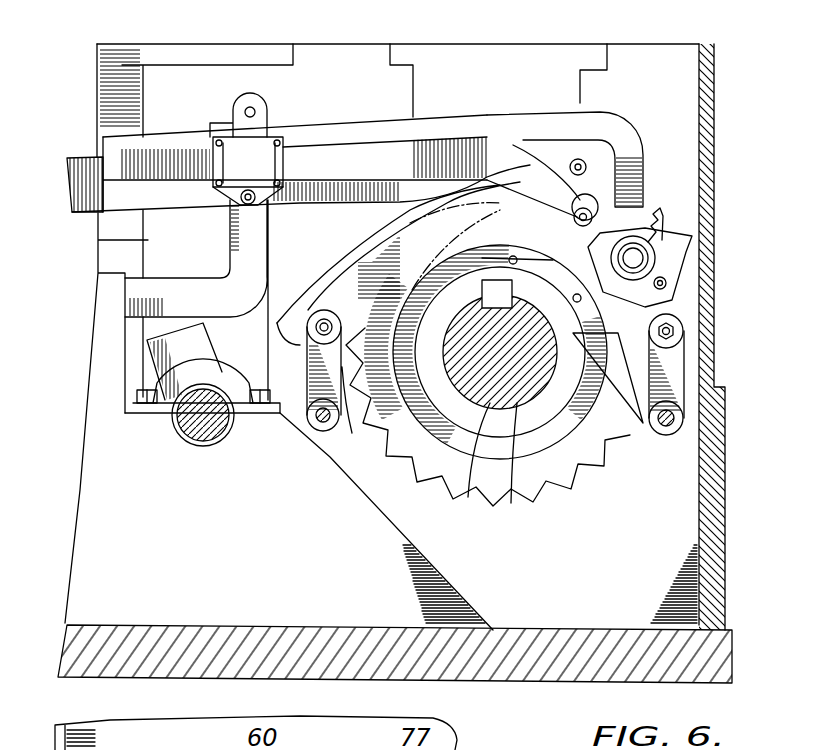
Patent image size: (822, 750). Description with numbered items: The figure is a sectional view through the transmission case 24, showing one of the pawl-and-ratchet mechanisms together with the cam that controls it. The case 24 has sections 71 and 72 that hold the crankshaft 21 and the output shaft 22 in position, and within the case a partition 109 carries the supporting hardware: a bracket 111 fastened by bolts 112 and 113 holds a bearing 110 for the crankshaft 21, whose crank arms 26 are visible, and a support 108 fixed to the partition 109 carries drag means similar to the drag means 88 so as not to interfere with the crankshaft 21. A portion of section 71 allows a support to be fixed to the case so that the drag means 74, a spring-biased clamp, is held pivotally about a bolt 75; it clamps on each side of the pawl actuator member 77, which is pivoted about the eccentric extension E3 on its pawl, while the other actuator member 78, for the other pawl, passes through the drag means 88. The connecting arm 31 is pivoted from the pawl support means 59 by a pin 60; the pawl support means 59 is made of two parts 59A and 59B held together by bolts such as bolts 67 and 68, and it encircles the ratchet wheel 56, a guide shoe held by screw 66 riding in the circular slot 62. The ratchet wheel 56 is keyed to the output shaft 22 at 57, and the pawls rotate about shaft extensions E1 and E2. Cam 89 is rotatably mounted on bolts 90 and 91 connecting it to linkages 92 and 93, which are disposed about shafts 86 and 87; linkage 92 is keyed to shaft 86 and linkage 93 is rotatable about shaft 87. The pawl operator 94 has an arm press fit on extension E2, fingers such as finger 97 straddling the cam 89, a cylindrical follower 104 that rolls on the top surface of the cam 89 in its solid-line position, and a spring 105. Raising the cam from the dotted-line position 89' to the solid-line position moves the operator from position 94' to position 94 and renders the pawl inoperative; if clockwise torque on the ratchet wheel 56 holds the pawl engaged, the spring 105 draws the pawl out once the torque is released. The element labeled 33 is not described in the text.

The case 24 is at (342, 47).
The top plate 33 is at (218, 52).
The section of case 72 is at (407, 78).
The section of case 71 is at (147, 240).
The connecting arm 31 is at (82, 165).
The pawl actuator member 77 is at (330, 123).
The actuator member 78 is at (230, 163).
The drag means 88 is at (283, 193).
The bolt 75 is at (240, 198).
The drag means 74 is at (280, 123).
The support for drag means 108 is at (175, 285).
The crank arms 26 is at (203, 337).
The crankshaft 21 is at (192, 442).
The bearing 110 is at (227, 447).
The bracket 111 is at (147, 407).
The bolt 112 is at (133, 395).
The bolt 113 is at (258, 403).
The partition 109 is at (251, 546).
The cam 89 is at (398, 252).
The dotted line position of cam 89' is at (314, 290).
The bolt 90 is at (320, 313).
The linkage 92 is at (342, 373).
The shaft 86 is at (317, 420).
The screw 66 is at (453, 257).
The eccentric extension E3 is at (538, 225).
The output shaft 22 is at (517, 500).
The ratchet wheel 56 is at (560, 497).
The key 57 is at (483, 292).
The circular slot 62 is at (477, 497).
The finger 97 is at (535, 256).
The pin 60 is at (508, 147).
The pawl support means 59 is at (603, 167).
The part of pawl support means 59A is at (553, 143).
The part of pawl support means 59B is at (525, 137).
The bolt 67 is at (582, 165).
The shaft extension E1 is at (637, 187).
The pawl operator 94 is at (640, 236).
The dotted line position of pawl operator 94' is at (702, 299).
The spring 105 is at (660, 226).
The cylindrical follower 104 is at (650, 207).
The shaft extension E2 is at (640, 260).
The bolt 68 is at (662, 283).
The linkage 93 is at (672, 363).
The bolt 91 is at (673, 331).
The shaft 87 is at (674, 420).